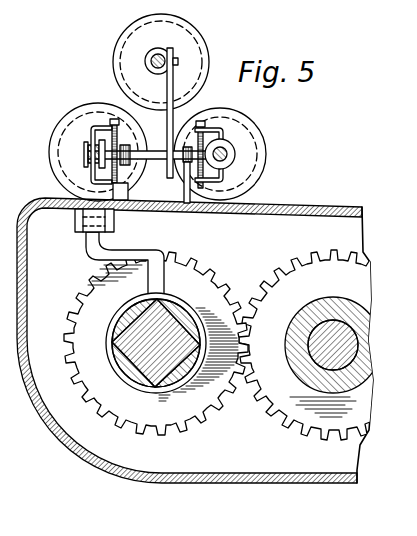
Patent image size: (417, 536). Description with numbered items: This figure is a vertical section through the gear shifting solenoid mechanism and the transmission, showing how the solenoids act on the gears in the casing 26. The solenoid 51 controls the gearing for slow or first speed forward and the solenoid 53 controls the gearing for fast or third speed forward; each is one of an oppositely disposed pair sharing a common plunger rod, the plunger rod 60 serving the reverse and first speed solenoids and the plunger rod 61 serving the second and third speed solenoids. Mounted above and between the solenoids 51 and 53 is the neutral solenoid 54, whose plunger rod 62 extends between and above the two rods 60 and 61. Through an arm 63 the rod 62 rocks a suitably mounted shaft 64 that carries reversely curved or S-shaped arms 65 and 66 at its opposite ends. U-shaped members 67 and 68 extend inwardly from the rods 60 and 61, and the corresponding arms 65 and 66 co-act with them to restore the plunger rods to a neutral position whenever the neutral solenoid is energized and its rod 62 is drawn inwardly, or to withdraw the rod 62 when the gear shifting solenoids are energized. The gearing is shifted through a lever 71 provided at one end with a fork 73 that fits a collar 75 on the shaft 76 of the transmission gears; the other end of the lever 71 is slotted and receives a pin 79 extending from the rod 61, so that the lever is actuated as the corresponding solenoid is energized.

The casing 26 is at (193, 483).
The solenoid 51 is at (250, 150).
The solenoid 53 is at (60, 143).
The neutral solenoid 54 is at (187, 52).
The plunger rod 60 is at (232, 158).
The plunger rod 61 is at (85, 158).
The plunger rod 62 is at (152, 57).
The arm 63 is at (173, 78).
The shaft 64 is at (148, 151).
The S-shaped arm 65 is at (201, 121).
The S-shaped arm 66 is at (113, 119).
The U-shaped member 67 is at (223, 130).
The U-shaped member 68 is at (93, 128).
The lever 71 is at (97, 166).
The fork 73 is at (184, 306).
The collar 75 is at (110, 355).
The shaft 76 is at (147, 360).
The pin 79 is at (84, 153).